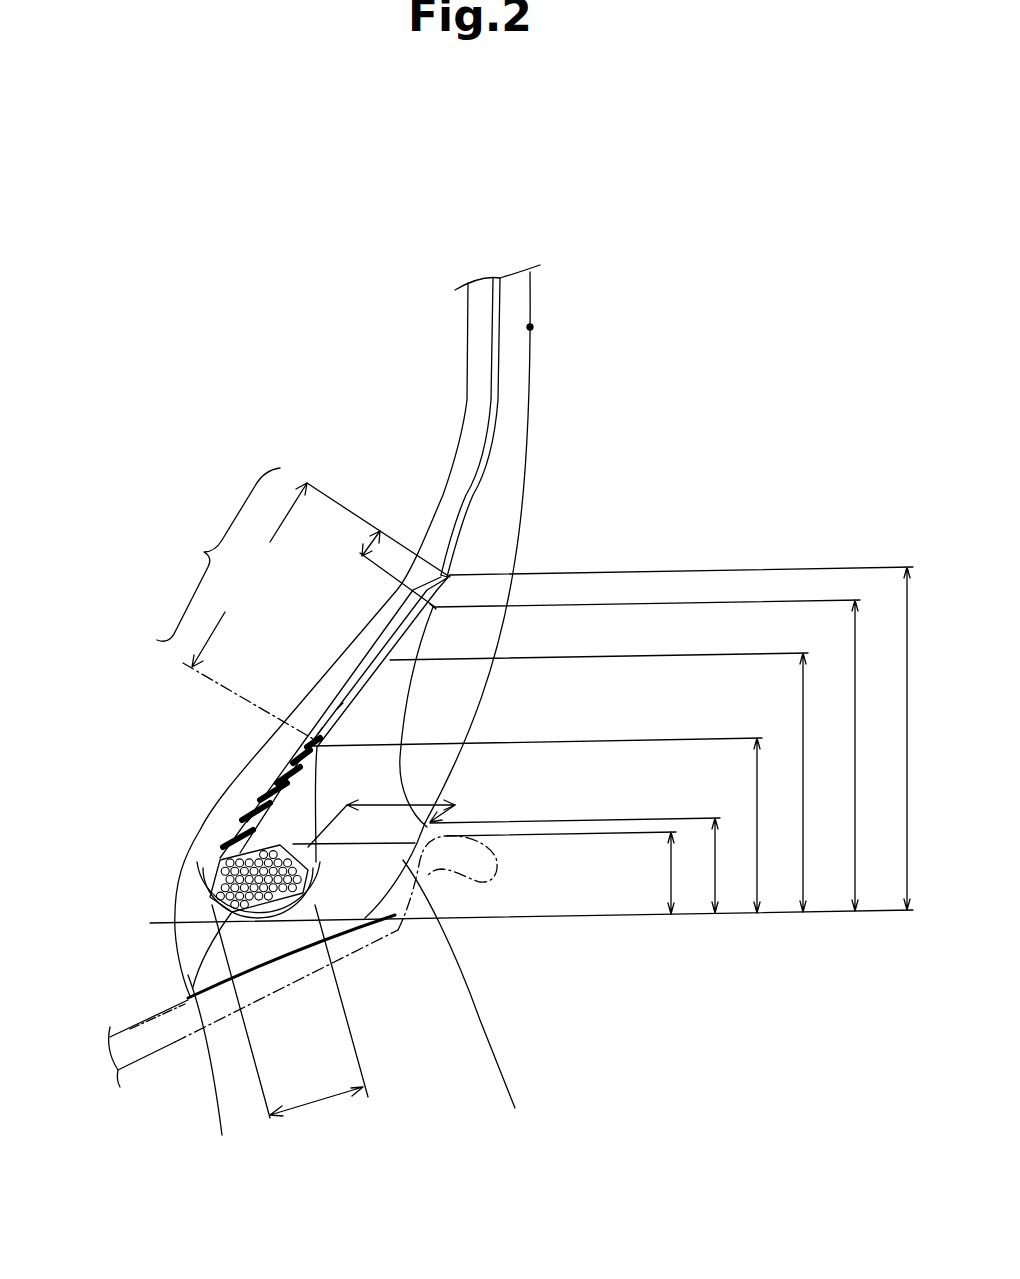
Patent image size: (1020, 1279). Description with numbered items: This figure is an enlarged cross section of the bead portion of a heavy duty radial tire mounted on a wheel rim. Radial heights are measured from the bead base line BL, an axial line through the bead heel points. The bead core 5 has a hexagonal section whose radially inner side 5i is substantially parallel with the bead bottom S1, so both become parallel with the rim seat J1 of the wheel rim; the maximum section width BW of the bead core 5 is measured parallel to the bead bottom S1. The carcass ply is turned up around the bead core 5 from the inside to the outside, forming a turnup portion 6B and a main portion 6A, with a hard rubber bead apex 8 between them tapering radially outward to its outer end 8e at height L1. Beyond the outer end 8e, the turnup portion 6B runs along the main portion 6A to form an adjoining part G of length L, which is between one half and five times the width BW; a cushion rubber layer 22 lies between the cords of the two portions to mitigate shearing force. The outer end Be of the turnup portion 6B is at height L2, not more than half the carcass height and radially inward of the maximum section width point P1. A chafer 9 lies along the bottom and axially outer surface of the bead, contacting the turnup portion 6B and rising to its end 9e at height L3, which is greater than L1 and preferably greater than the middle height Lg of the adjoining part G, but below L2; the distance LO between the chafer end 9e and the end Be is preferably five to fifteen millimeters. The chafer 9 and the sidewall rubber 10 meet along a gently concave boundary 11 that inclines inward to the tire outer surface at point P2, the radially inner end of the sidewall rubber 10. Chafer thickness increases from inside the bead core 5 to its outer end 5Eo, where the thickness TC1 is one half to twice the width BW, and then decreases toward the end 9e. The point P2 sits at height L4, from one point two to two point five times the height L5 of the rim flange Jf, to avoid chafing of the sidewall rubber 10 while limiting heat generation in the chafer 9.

The sidewall rubber 10 is at (518, 433).
The maximum tire section width point P1 is at (530, 327).
The radially inner side of bead core 5i is at (190, 1000).
The carcass ply main portion 6A is at (465, 493).
The radially outer end of turnup portion Be is at (466, 553).
The carcass ply turnup portion 6B is at (380, 662).
The rubber layer 22 is at (343, 703).
The bead core 5 is at (198, 872).
The outer end of bead core 5Eo is at (247, 822).
The bead apex 8 is at (250, 773).
The radially outer end of bead apex 8e is at (268, 734).
The boundary 11 is at (430, 637).
The chafer end 9e is at (460, 603).
The chafer 9 is at (363, 860).
The radially inner end of sidewall rubber P2 is at (457, 806).
The chafer rubber thickness at bead core outer end TC1 is at (348, 806).
The rim seat J1 is at (132, 1028).
The rim flange Jf is at (497, 868).
The bead base line BL is at (515, 920).
The radial height of turnup outer end L2 is at (685, 738).
The chafer height L3 is at (653, 755).
The middle height of adjoining part Lg is at (606, 782).
The radial height of bead apex outer end L1 is at (543, 825).
The height of point P2 L4 is at (582, 865).
The rim flange height L5 is at (565, 873).
The adjoining part G is at (218, 554).
The length of adjoining part L is at (316, 611).
The distance between chafer end and turnup end LO is at (374, 540).
The maximum section width of bead core BW is at (310, 1104).
The bead bottom S1 is at (239, 1075).